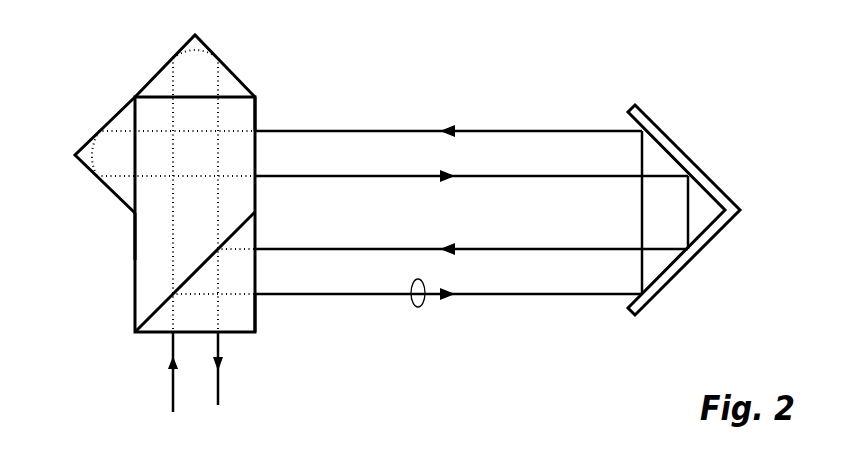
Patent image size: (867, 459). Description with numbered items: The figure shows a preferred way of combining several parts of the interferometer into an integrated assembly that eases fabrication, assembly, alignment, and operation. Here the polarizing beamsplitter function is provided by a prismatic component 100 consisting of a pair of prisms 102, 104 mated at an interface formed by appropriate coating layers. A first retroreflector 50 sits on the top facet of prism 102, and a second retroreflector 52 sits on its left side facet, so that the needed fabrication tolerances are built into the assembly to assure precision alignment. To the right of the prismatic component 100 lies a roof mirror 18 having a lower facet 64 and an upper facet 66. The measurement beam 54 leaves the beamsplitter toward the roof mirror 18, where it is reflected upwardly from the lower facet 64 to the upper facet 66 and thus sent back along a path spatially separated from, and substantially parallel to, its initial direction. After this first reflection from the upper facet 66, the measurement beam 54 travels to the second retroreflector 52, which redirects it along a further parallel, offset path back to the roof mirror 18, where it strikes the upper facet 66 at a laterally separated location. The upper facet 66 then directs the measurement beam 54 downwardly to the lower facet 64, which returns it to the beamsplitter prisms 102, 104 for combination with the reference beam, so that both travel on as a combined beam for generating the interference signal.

The roof mirror 18 is at (653, 123).
The first retroreflector 50 is at (233, 68).
The second retroreflector 52 is at (118, 112).
The measurement beam 54 is at (418, 307).
The lower facet 64 is at (659, 275).
The upper facet 66 is at (660, 146).
The prismatic component 100 is at (256, 113).
The prism 102 is at (135, 237).
The prism 104 is at (256, 308).